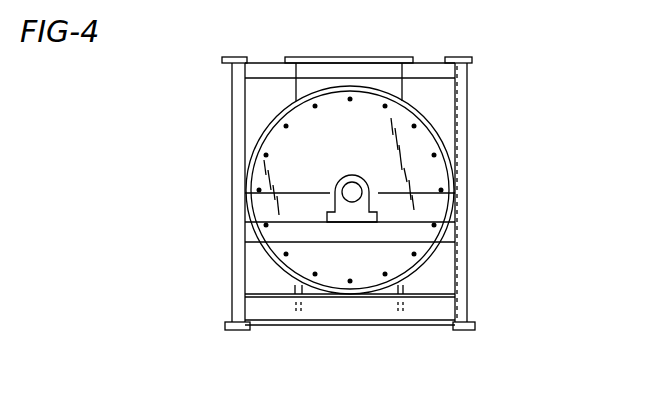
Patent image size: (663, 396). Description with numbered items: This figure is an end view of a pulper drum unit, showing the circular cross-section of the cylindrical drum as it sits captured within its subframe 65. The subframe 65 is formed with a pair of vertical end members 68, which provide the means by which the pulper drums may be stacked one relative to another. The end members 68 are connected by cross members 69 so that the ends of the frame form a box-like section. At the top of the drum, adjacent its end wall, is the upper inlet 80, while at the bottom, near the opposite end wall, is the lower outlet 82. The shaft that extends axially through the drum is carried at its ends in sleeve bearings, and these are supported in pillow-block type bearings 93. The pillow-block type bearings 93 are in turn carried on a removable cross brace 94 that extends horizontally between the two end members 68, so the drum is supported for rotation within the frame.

The subframe 65 is at (373, 312).
The vertical end members 68 is at (237, 160).
The cross members 69 is at (270, 73).
The upper inlet 80 is at (377, 57).
The lower outlet 82 is at (410, 322).
The pillow-block type bearings 93 is at (361, 207).
The removable cross brace 94 is at (450, 232).